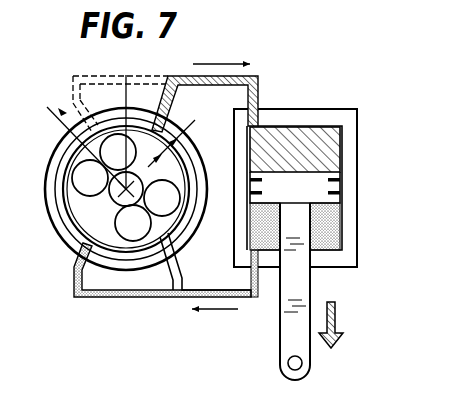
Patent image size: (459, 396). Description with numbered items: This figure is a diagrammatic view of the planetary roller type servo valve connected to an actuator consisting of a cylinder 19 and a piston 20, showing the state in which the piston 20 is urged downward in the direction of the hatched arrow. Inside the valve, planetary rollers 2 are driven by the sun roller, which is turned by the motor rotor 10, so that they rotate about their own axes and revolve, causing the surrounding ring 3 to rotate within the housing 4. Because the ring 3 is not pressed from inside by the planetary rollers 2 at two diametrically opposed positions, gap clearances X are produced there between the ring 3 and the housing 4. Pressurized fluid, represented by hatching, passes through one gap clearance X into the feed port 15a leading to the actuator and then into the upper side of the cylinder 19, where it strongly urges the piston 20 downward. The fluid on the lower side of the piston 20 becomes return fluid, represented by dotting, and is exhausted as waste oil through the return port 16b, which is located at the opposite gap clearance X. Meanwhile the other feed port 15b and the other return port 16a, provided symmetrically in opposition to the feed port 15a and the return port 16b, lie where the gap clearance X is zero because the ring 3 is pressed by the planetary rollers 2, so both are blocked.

The motor rotor 10 is at (77, 91).
The planetary rollers 2 is at (72, 176).
The ring 3 is at (72, 212).
The housing 4 is at (62, 235).
The gap clearance X is at (175, 136).
The return port extending from the actuator 16a is at (82, 95).
The feed port leading to the actuator 15a is at (153, 86).
The return port extending from the actuator 16b is at (77, 250).
The feed port leading to the actuator 15b is at (163, 240).
The cylinder 19 is at (348, 142).
The piston 20 is at (315, 188).